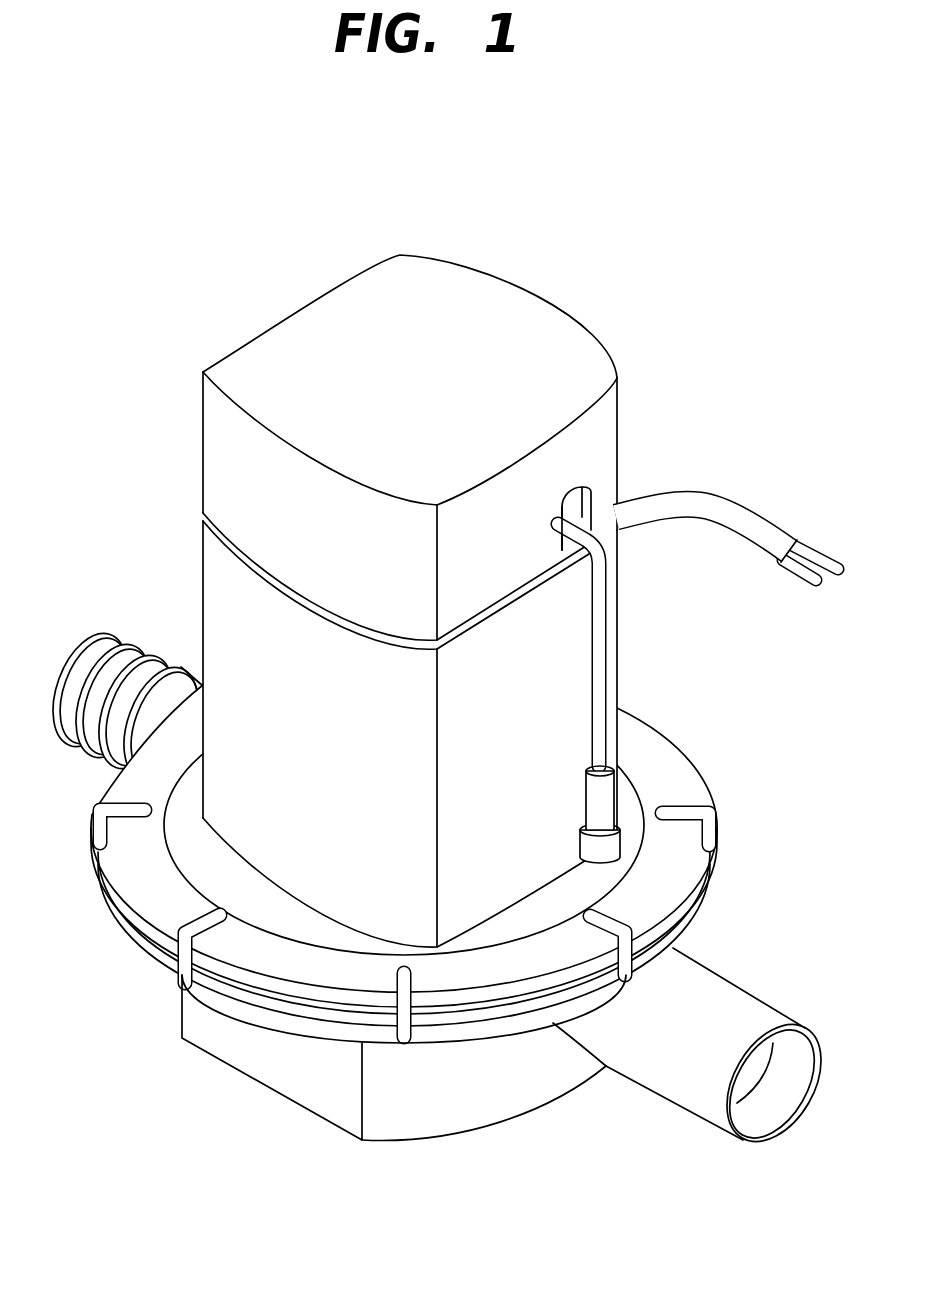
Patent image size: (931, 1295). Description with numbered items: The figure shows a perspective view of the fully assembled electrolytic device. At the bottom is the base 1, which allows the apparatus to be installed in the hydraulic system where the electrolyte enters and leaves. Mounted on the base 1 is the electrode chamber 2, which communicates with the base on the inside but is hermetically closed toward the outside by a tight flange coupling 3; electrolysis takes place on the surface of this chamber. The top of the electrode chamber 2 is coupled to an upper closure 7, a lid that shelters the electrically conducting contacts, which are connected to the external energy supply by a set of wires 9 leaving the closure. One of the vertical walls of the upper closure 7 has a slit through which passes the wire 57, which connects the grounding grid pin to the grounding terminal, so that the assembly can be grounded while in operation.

The base 1 is at (503, 1090).
The electrode chamber 2 is at (212, 582).
The tight flange coupling 3 is at (312, 970).
The upper closure 7 is at (212, 433).
The set of wires 9 is at (715, 512).
The wire 57 is at (601, 664).